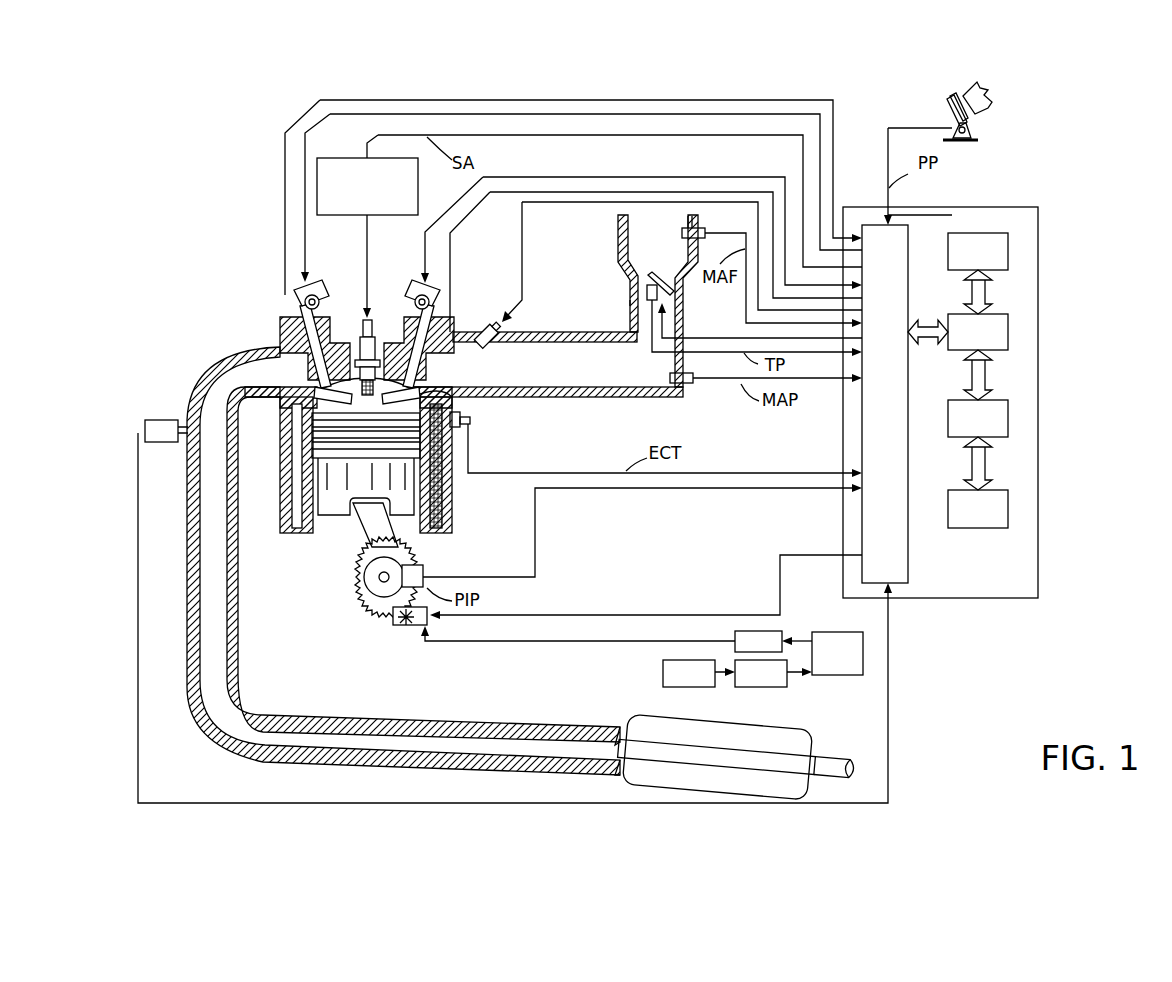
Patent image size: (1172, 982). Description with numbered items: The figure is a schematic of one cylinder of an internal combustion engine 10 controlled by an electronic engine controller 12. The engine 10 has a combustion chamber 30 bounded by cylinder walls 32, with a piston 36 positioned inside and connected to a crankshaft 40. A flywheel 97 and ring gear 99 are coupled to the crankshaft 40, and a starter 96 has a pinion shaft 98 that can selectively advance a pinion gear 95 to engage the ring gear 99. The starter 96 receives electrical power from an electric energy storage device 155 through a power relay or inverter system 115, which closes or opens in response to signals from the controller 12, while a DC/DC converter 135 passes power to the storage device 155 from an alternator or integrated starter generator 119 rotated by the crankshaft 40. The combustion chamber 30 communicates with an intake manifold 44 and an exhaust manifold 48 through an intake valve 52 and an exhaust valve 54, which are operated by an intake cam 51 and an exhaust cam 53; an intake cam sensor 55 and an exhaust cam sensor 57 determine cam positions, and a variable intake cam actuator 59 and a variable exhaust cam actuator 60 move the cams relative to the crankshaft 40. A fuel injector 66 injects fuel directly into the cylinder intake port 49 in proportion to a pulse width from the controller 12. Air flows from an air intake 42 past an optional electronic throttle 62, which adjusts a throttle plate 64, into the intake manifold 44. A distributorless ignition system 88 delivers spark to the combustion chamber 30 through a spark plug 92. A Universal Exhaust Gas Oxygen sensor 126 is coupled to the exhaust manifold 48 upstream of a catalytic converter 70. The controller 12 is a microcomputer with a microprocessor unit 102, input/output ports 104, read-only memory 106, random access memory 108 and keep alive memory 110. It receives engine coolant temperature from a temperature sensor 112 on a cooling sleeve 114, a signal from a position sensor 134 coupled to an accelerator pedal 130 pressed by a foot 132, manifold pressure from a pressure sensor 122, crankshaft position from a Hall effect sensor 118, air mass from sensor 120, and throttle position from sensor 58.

The internal combustion engine 10 is at (222, 274).
The electronic engine controller 12 is at (1030, 206).
The combustion chamber 30 is at (299, 488).
The cylinder walls 32 is at (318, 527).
The piston 36 is at (352, 487).
The crankshaft 40 is at (373, 594).
The air intake 42 is at (658, 301).
The intake manifold 44 is at (547, 364).
The exhaust manifold 48 is at (403, 561).
The cylinder intake port 49 is at (450, 378).
The intake cam 51 is at (415, 282).
The intake valve 52 is at (424, 382).
The exhaust cam 53 is at (316, 282).
The exhaust valve 54 is at (328, 386).
The intake cam sensor 55 is at (430, 303).
The exhaust cam sensor 57 is at (300, 306).
The throttle position sensor 58 is at (631, 306).
The variable intake cam actuator 59 is at (416, 310).
The variable exhaust cam actuator 60 is at (322, 300).
The electronic throttle 62 is at (677, 287).
The throttle plate 64 is at (640, 281).
The fuel injector 66 is at (492, 327).
The catalytic converter 70 is at (662, 722).
The distributorless ignition system 88 is at (333, 158).
The spark plug 92 is at (362, 338).
The pinion gear 95 is at (418, 628).
The starter 96 is at (404, 620).
The flywheel 97 is at (367, 573).
The pinion shaft 98 is at (405, 627).
The ring gear 99 is at (377, 613).
The microprocessor unit 102 is at (1010, 324).
The input/output ports 104 is at (912, 232).
The read-only memory 106 is at (1010, 250).
The random access memory 108 is at (1010, 417).
The keep alive memory 110 is at (1010, 505).
The temperature sensor 112 is at (467, 430).
The cooling sleeve 114 is at (436, 494).
The power relay or inverter system 115 is at (758, 641).
The Hall effect sensor 118 is at (423, 563).
The alternator or integrated starter generator 119 is at (689, 673).
The air mass sensor 120 is at (702, 228).
The pressure sensor 122 is at (687, 384).
The Universal Exhaust Gas Oxygen sensor 126 is at (146, 425).
The accelerator pedal 130 is at (950, 101).
The foot 132 is at (988, 96).
The position sensor 134 is at (972, 128).
The DC/DC converter 135 is at (761, 673).
The electric energy storage device 155 is at (837, 653).